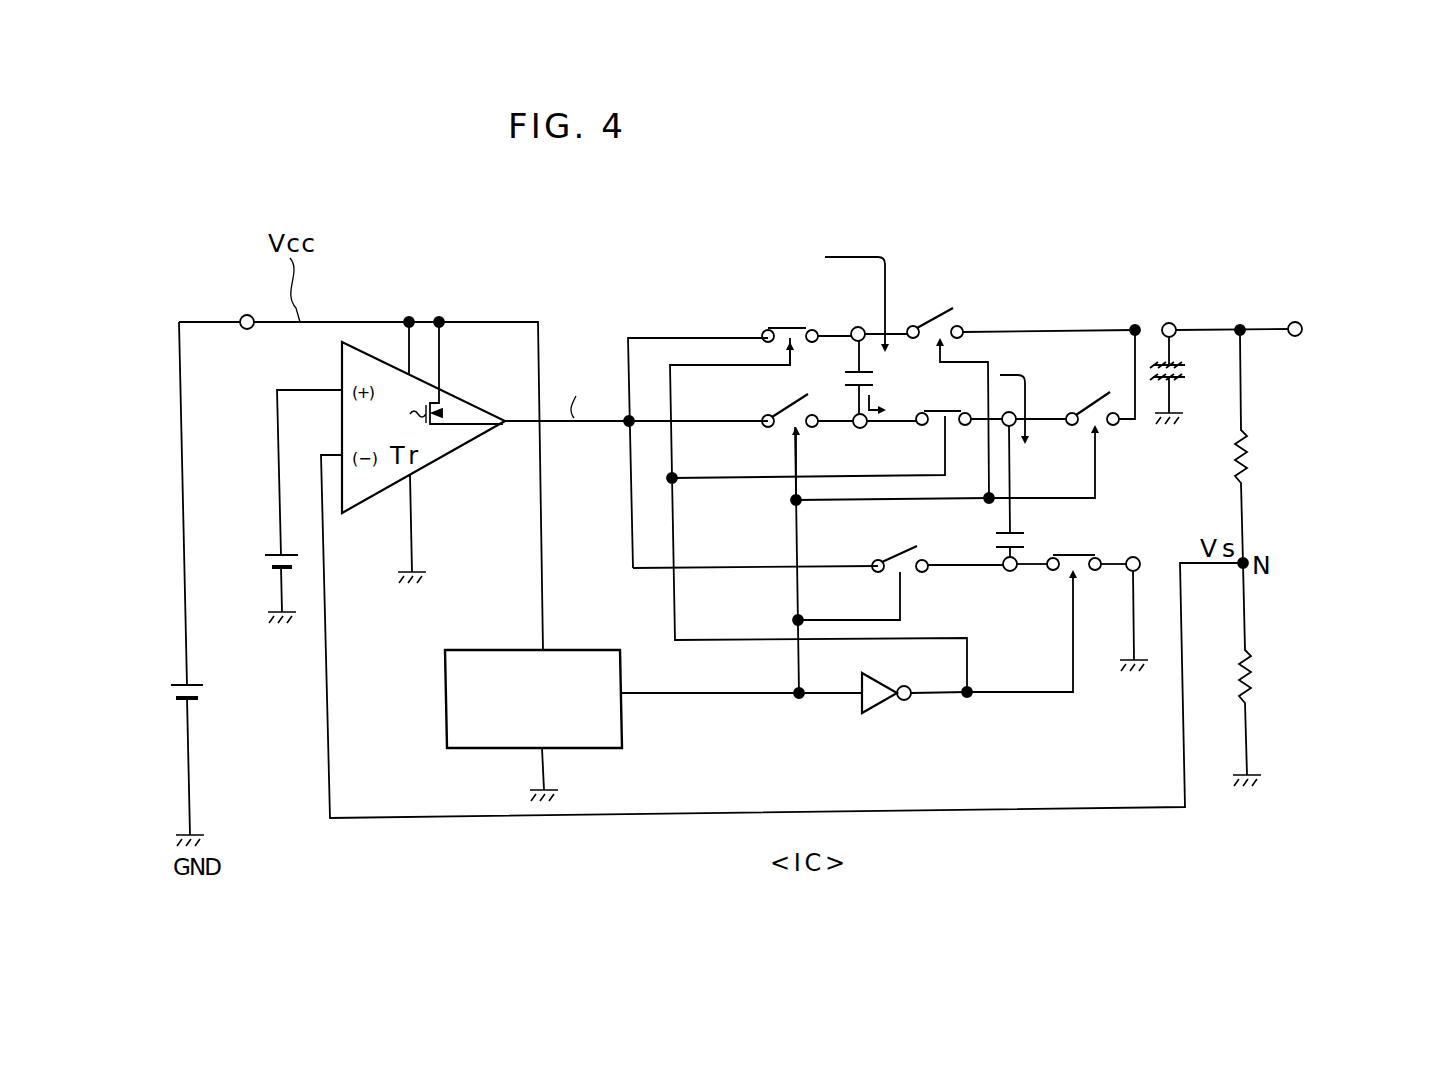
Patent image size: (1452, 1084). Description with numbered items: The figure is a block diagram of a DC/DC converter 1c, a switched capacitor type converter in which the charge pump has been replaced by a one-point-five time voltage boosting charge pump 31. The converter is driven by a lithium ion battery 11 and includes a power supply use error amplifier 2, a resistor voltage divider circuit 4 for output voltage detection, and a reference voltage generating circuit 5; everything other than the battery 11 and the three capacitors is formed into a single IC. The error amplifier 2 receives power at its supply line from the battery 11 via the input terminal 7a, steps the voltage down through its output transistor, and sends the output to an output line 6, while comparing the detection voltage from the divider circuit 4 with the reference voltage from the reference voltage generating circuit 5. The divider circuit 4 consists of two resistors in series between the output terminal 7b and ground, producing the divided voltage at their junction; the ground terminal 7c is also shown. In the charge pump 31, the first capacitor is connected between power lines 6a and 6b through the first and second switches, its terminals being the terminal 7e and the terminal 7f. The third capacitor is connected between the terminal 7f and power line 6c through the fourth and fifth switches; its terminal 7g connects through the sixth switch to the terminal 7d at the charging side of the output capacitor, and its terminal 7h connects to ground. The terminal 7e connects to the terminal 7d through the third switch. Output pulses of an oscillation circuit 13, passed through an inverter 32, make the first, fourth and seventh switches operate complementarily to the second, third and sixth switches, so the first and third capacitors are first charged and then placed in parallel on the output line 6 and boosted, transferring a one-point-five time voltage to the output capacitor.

The DC/DC converter 1c is at (950, 202).
The power supply use error amplifier 2 is at (462, 392).
The resistor voltage divider circuit 4 is at (1326, 546).
The reference voltage generating circuit 5 is at (273, 552).
The output line 6 is at (506, 424).
The power line 6a is at (638, 332).
The power line 6b is at (720, 420).
The power line 6c is at (644, 568).
The input terminal 7a is at (242, 316).
The output terminal 7b is at (1295, 322).
The ground terminal 7c is at (1129, 575).
The terminal 7d is at (1166, 322).
The terminal 7e is at (856, 324).
The terminal 7f is at (862, 428).
The terminal 7g is at (1009, 412).
The terminal 7h is at (1012, 571).
The lithium ion battery 11 is at (178, 682).
The oscillation circuit 13 is at (488, 650).
The 1.5 time voltage boosting charge pump 31 is at (1010, 233).
The inverter 32 is at (879, 710).